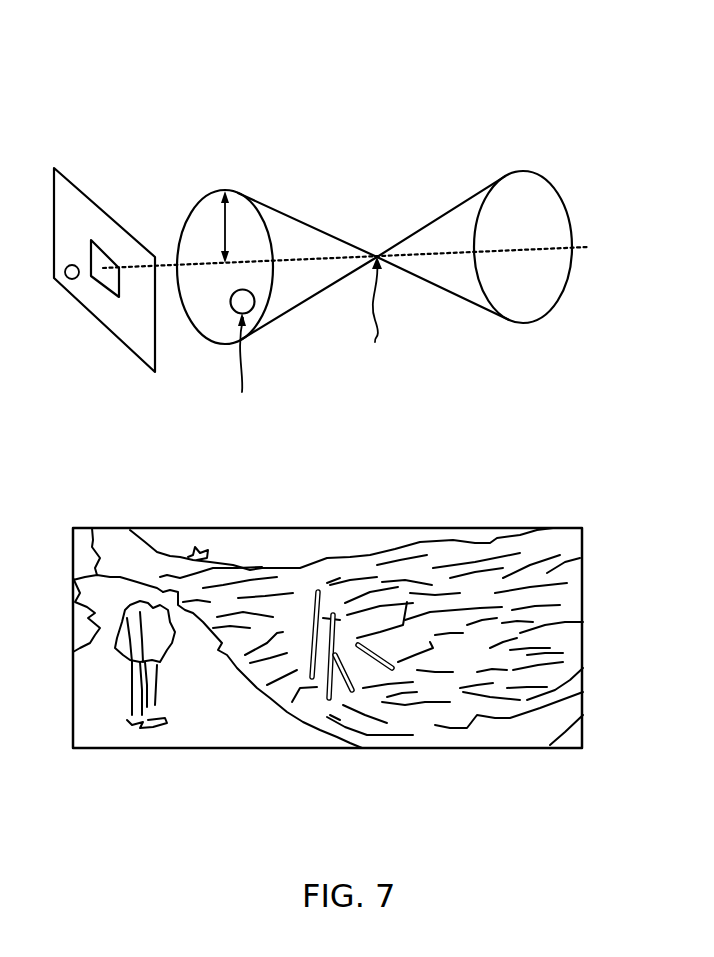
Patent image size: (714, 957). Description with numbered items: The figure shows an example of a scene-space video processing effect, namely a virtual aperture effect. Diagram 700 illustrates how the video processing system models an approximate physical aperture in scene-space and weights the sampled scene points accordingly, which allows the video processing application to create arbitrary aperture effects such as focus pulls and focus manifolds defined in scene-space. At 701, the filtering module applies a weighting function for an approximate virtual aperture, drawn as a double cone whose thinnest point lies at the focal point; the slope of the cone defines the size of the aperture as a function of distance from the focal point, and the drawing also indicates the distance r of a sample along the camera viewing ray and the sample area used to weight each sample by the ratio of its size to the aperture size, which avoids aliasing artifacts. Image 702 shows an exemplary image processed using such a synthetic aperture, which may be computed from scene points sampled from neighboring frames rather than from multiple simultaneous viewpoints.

The diagram 700 is at (100, 78).
The virtual aperture weighting function 701 is at (520, 395).
The image 702 is at (498, 793).